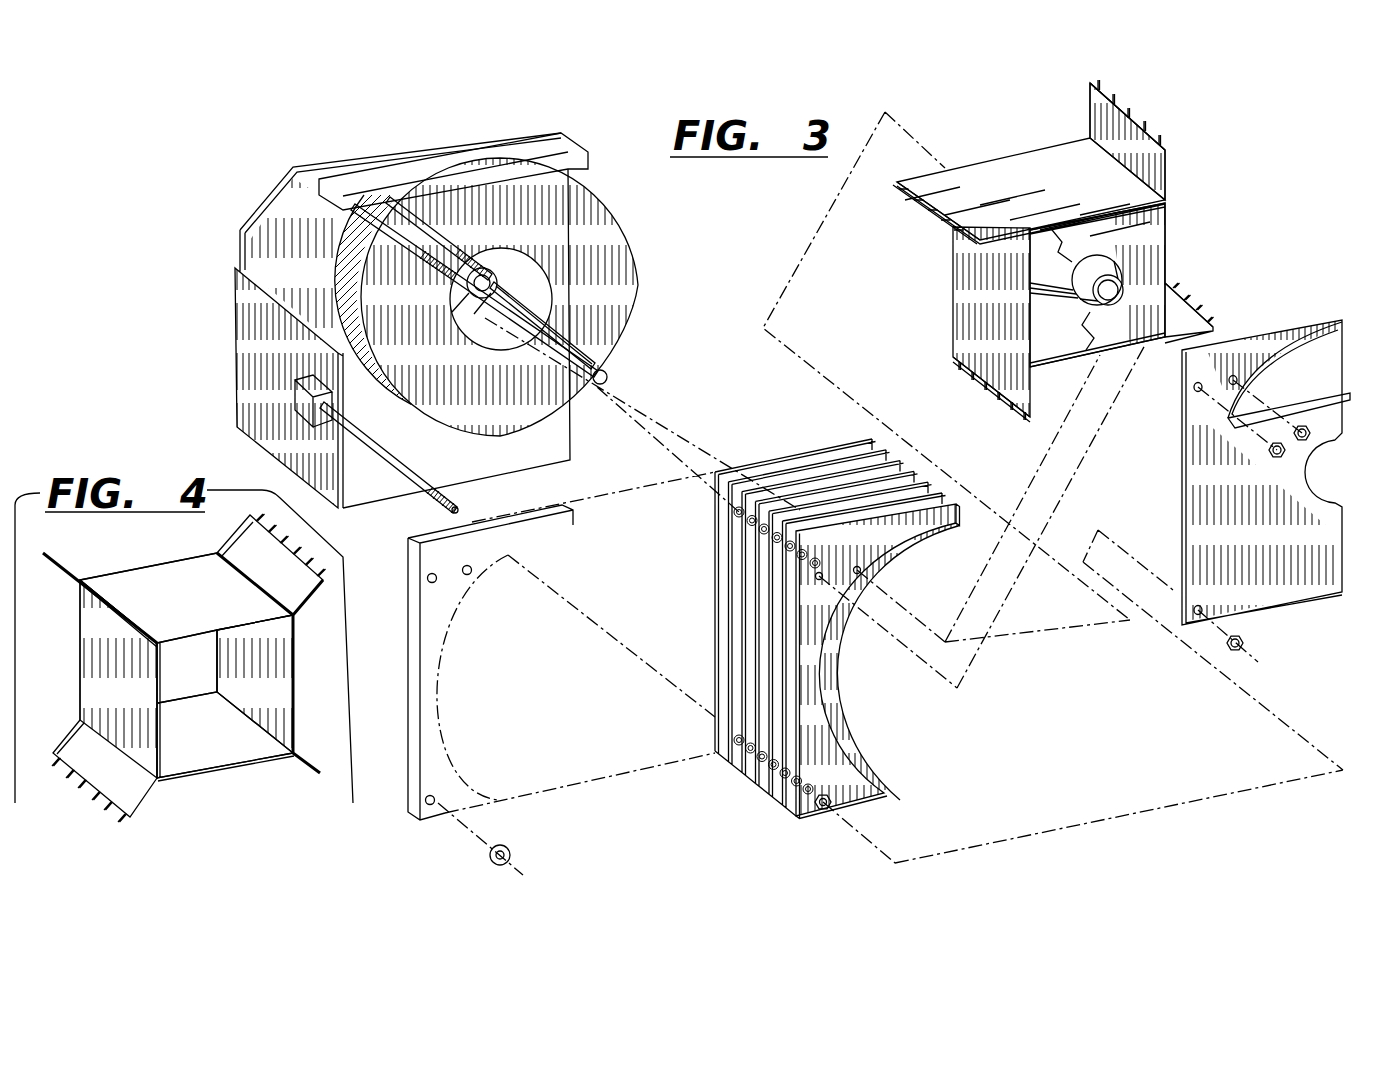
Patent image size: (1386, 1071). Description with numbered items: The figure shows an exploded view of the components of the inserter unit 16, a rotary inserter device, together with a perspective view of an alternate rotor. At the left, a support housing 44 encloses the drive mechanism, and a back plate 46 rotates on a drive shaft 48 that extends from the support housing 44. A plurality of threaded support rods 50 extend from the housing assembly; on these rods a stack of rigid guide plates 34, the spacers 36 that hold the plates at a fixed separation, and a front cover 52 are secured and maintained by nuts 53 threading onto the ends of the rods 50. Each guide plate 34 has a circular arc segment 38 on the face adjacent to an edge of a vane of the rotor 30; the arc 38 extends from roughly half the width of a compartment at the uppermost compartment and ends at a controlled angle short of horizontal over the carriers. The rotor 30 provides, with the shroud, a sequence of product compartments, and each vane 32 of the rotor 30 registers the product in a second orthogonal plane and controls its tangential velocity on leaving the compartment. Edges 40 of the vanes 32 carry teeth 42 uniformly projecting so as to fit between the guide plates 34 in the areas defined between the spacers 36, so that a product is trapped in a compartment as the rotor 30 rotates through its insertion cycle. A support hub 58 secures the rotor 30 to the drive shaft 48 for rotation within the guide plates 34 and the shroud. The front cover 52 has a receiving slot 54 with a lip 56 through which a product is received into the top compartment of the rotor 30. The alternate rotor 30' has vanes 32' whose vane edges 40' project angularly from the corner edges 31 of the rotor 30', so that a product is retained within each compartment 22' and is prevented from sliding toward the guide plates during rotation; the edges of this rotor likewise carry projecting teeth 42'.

In FIG. 3, the inserter unit 16 is at (498, 117).
In FIG. 3, the rotor 30 is at (1055, 250).
In FIG. 3, the vane 32 is at (1093, 250).
In FIG. 3, the guide plates 34 is at (785, 736).
In FIG. 3, the spacers 36 is at (770, 505).
In FIG. 3, the circular arc segment 38 is at (829, 643).
In FIG. 3, the edges 40 is at (1066, 252).
In FIG. 3, the teeth 42 is at (1056, 239).
In FIG. 3, the support housing 44 is at (262, 189).
In FIG. 3, the back plate 46 is at (603, 188).
In FIG. 3, the drive shaft 48 is at (528, 310).
In FIG. 3, the threaded support rods 50 is at (348, 207).
In FIG. 3, the front cover 52 is at (1280, 577).
In FIG. 3, the nuts 53 is at (1285, 462).
In FIG. 3, the receiving slot 54 is at (1265, 373).
In FIG. 3, the lip 56 is at (1332, 392).
In FIG. 3, the support hub 58 is at (1107, 273).
In FIG. 4, the rotor 30' is at (187, 685).
In FIG. 4, the corner edges 31 is at (140, 657).
In FIG. 4, the vanes 32' is at (183, 675).
In FIG. 4, the compartment 22' is at (190, 708).
In FIG. 4, the vane edges 40' is at (199, 689).
In FIG. 4, the teeth 42' is at (178, 680).